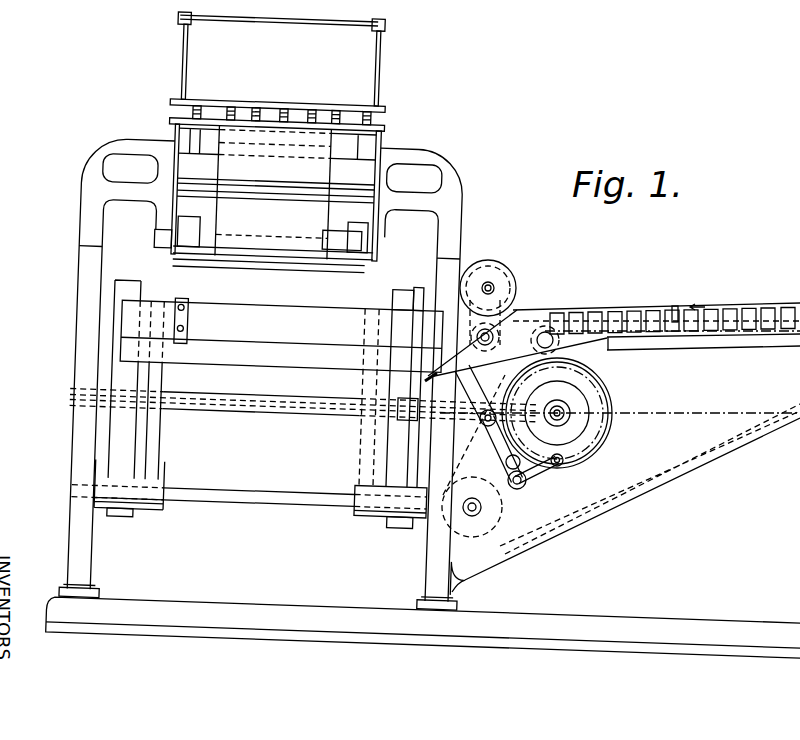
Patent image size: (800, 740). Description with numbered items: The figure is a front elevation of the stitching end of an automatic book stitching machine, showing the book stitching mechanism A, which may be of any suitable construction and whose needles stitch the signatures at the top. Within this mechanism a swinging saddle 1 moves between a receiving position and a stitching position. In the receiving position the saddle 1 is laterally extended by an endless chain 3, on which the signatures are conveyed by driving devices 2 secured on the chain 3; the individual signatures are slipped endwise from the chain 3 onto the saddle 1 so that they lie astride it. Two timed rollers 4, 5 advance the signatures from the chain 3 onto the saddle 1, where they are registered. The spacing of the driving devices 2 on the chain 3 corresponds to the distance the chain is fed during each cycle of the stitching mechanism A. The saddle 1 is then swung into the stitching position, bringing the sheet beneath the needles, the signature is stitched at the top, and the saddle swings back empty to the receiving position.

The book stitching mechanism A is at (277, 142).
The swinging saddle 1 is at (322, 318).
The driving devices 2 is at (678, 313).
The endless chain 3 is at (600, 312).
The timed roller 4 is at (470, 338).
The timed roller 5 is at (506, 281).